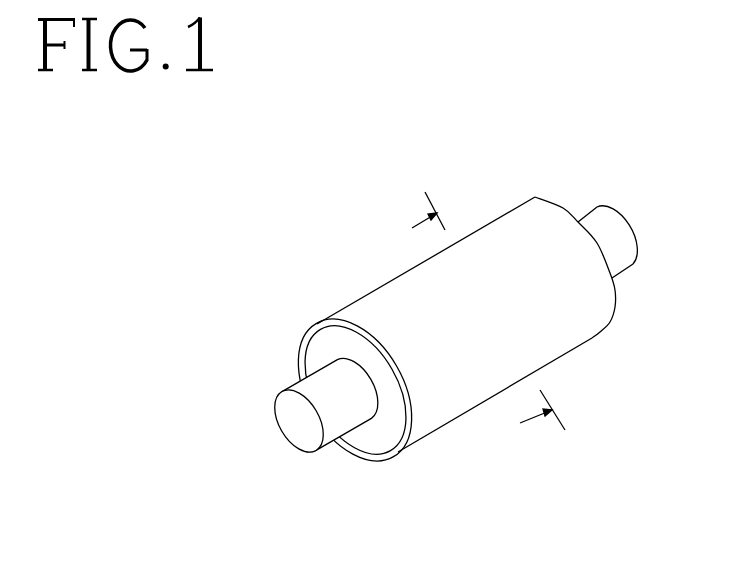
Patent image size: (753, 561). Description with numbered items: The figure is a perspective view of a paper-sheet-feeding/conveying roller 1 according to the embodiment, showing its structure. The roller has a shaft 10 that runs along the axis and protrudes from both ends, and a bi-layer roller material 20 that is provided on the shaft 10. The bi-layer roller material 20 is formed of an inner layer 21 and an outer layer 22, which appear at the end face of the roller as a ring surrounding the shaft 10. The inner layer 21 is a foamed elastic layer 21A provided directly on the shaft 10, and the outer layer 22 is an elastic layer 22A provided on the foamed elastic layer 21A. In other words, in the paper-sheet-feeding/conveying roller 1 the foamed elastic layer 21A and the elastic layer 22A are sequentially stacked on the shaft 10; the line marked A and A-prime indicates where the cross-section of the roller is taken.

The paper-sheet-feeding/conveying roller 1 is at (634, 172).
The shaft 10 is at (288, 412).
The bi-layer roller material 20 is at (307, 246).
The inner layer 21 is at (312, 361).
The foamed elastic layer 21A is at (315, 360).
The outer layer 22 is at (441, 339).
The elastic layer 22A is at (305, 326).